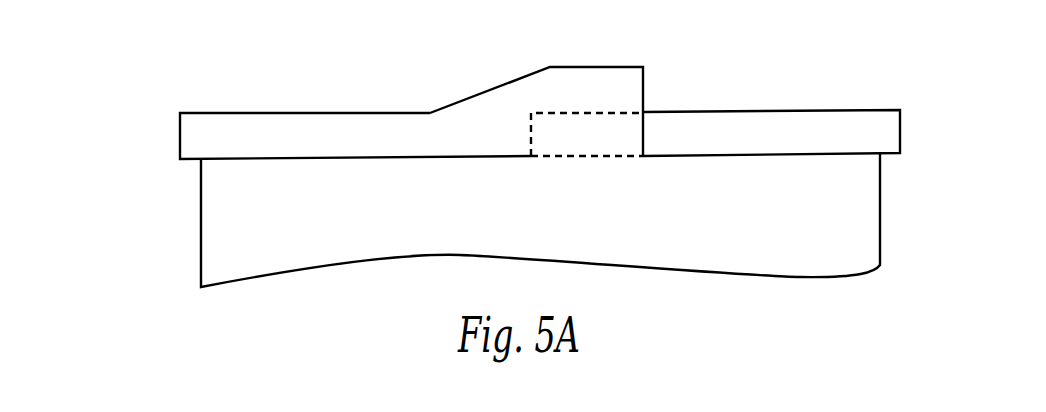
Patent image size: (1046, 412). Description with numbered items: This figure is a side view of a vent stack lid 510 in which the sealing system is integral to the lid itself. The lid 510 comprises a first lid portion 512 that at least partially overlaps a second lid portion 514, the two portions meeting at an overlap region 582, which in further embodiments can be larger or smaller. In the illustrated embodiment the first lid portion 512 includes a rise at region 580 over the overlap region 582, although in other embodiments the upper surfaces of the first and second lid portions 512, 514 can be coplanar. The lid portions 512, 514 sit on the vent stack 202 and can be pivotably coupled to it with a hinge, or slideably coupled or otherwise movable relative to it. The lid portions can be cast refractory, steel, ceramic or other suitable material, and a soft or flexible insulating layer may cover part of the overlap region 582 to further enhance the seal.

The vent stack lid 510 is at (479, 79).
The first lid portion 512 is at (297, 128).
The second lid portion 514 is at (807, 130).
The rise region 580 is at (565, 82).
The overlap region 582 is at (612, 115).
The vent stack 202 is at (200, 212).